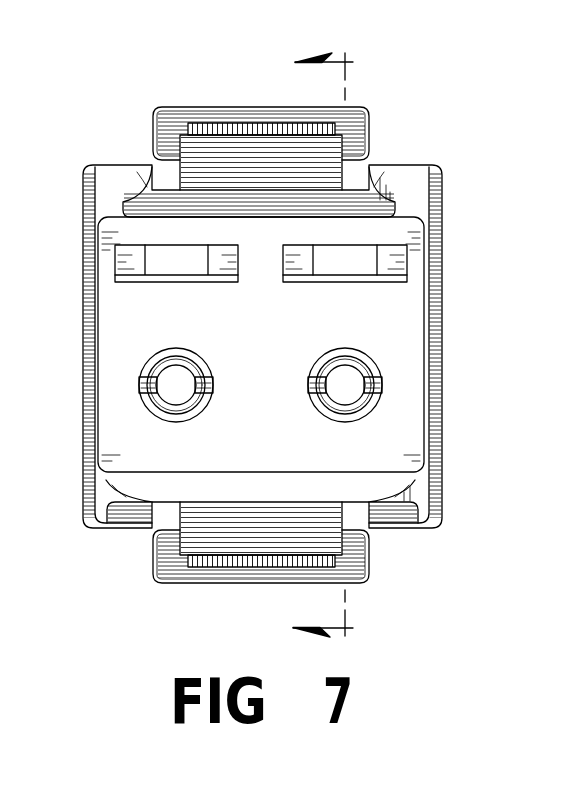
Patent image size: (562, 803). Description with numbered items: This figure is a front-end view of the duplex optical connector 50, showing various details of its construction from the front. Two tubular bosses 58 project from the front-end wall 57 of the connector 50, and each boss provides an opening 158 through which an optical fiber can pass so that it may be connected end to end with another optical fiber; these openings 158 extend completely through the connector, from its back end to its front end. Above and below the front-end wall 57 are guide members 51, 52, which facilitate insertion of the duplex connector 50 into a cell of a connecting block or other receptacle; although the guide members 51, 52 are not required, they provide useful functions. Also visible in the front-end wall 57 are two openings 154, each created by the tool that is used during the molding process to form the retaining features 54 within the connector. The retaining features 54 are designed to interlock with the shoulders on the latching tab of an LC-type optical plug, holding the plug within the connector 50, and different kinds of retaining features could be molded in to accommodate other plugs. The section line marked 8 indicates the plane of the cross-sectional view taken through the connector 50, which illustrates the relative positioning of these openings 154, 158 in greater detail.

The duplex optical connector 50 is at (133, 72).
The guide member 51 is at (130, 172).
The guide member 52 is at (135, 522).
The retaining feature 54 is at (303, 263).
The front-end wall 57 is at (272, 433).
The tubular boss 58 is at (320, 367).
The opening 154 is at (352, 253).
The opening 158 is at (352, 375).
The section line 8- 8 is at (323, 345).